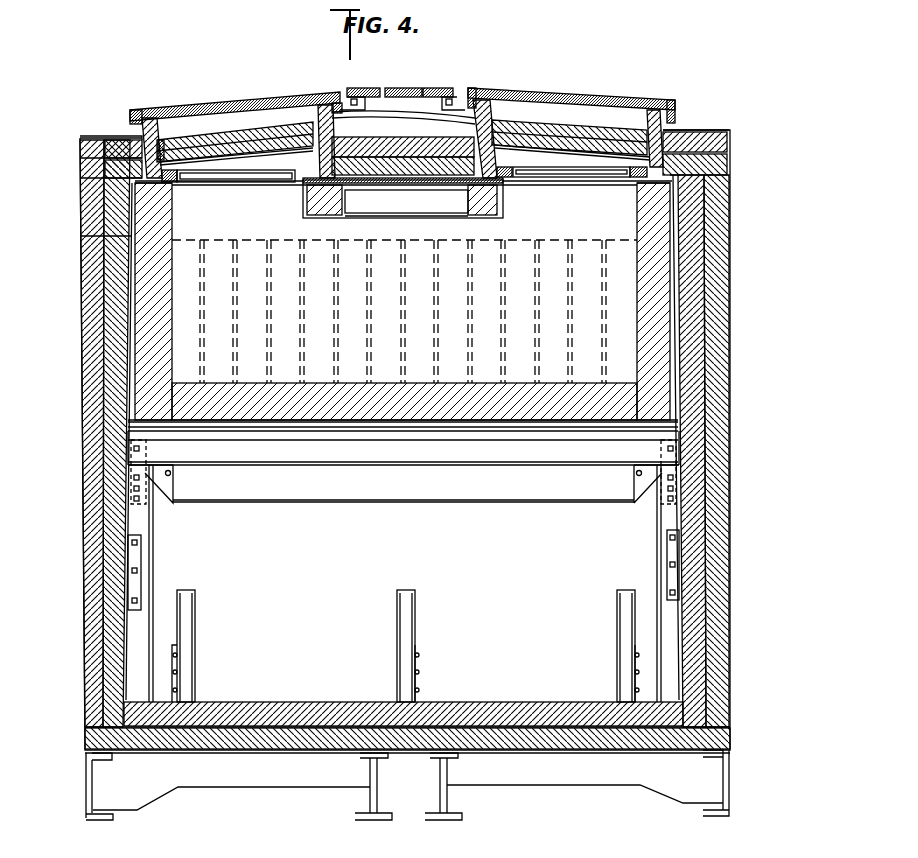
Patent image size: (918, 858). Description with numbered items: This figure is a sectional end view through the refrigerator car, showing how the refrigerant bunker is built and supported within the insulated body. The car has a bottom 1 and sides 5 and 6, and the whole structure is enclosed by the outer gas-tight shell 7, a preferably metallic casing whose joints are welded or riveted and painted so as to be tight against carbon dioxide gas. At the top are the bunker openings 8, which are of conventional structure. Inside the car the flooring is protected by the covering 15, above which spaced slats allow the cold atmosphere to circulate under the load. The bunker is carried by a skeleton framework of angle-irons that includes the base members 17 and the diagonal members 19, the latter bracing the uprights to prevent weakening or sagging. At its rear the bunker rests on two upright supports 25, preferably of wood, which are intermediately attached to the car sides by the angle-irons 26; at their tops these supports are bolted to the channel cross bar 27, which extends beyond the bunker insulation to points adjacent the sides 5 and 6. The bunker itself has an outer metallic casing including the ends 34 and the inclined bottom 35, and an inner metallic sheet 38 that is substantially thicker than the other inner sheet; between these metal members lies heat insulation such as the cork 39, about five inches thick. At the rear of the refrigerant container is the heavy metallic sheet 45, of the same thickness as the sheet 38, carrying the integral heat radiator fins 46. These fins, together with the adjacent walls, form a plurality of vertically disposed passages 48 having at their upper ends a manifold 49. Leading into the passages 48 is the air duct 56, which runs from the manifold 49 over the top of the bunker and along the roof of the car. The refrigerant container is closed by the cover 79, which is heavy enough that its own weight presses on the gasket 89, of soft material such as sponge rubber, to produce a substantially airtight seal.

The bottom 1 is at (540, 740).
The side 5 is at (700, 385).
The side 6 is at (92, 353).
The outer gas-tight shell 7 is at (82, 312).
The bunker opening 8 is at (270, 127).
The covering 15 is at (515, 700).
The base member 17 is at (397, 695).
The diagonal member 19 is at (195, 630).
The upright support 25 is at (150, 612).
The angle-iron 26 is at (141, 556).
The channel cross bar 27 is at (507, 450).
The end 34 is at (133, 212).
The inclined bottom 35 is at (340, 422).
The inner metallic sheet 38 is at (390, 383).
The cork insulation 39 is at (498, 200).
The heavy metallic sheet 45 is at (105, 235).
The heat radiator fin 46 is at (268, 260).
The vertically disposed passage 48 is at (350, 338).
The manifold 49 is at (555, 235).
The air duct 56 is at (403, 199).
The cover 79 is at (223, 170).
The gasket 89 is at (170, 172).